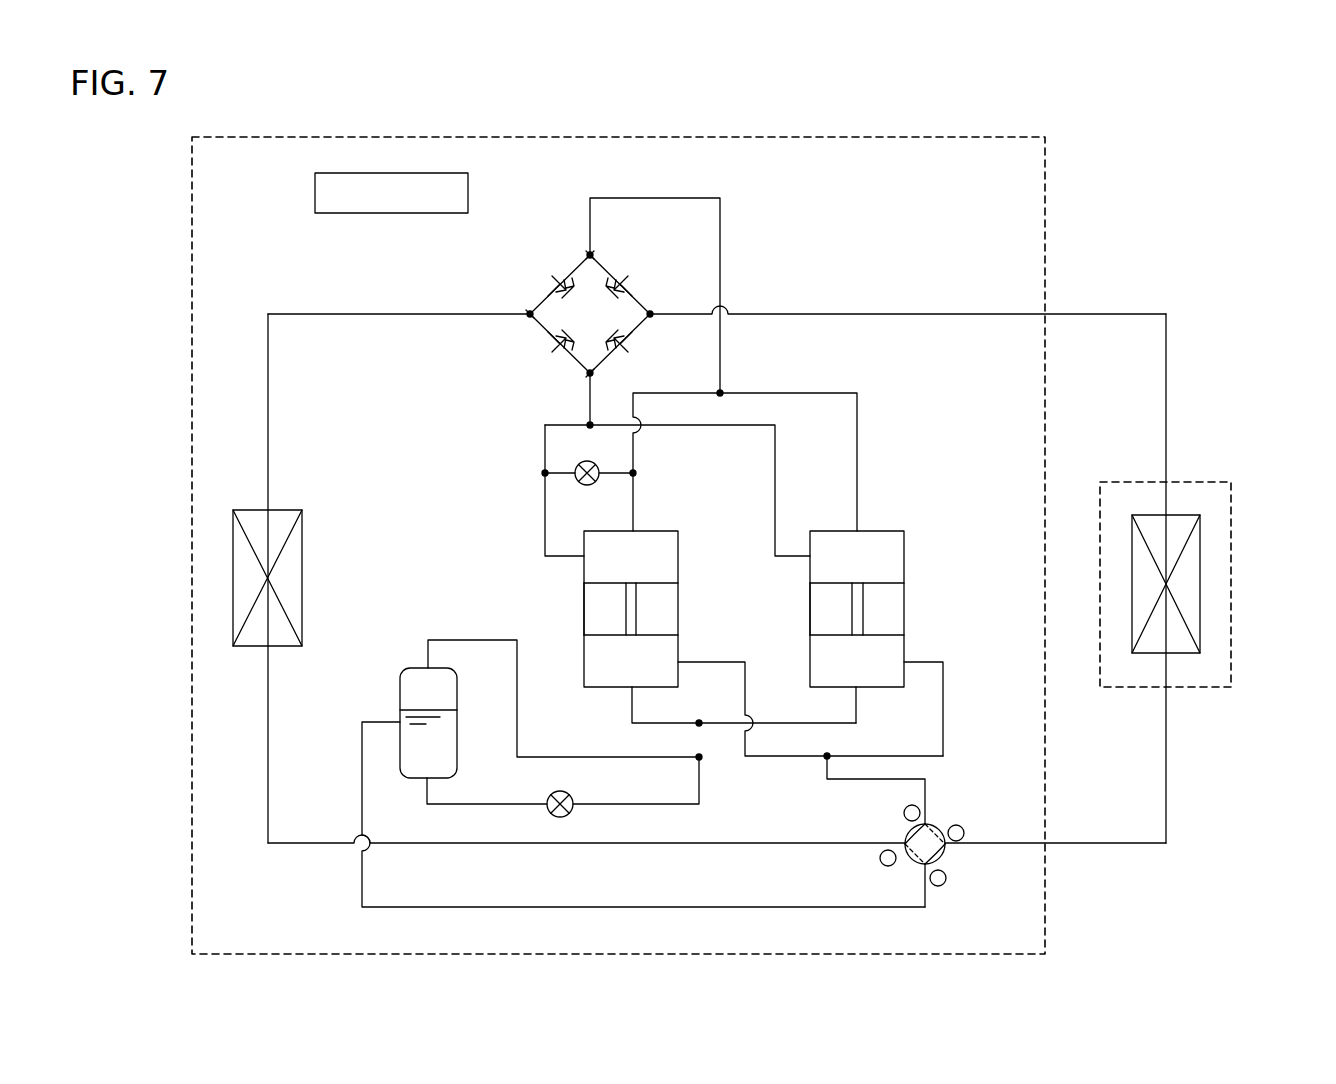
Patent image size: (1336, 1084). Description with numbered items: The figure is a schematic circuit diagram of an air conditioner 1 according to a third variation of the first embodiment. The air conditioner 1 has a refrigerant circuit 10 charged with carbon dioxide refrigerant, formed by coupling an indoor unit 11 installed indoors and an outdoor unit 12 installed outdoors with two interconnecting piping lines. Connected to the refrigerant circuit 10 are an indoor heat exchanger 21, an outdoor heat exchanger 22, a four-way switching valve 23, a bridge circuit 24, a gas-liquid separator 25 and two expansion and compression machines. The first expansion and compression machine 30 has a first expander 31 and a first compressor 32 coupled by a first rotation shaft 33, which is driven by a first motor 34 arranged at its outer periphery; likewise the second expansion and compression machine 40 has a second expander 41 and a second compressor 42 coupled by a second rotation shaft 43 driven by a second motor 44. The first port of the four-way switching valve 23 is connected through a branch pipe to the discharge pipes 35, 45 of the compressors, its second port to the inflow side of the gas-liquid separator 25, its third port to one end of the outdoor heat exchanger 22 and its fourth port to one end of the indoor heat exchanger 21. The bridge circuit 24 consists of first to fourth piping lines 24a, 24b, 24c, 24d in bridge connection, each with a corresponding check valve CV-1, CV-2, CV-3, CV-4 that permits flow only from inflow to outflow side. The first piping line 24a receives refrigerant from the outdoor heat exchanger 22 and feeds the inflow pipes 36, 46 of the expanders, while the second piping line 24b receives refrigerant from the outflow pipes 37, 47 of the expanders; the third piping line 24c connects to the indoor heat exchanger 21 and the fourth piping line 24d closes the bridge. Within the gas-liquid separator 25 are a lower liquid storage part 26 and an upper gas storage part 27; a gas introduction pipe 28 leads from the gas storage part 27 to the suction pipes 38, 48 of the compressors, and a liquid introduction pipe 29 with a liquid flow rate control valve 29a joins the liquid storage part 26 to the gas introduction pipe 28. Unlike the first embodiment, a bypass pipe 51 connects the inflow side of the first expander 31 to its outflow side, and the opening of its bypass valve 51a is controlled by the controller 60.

The air conditioner 1 is at (1282, 182).
The refrigerant circuit 10 is at (898, 300).
The indoor unit 11 is at (1165, 573).
The outdoor unit 12 is at (898, 136).
The indoor heat exchanger 21 is at (1178, 656).
The outdoor heat exchanger 22 is at (288, 650).
The four-way switching valve 23 is at (956, 860).
The bridge circuit 24 is at (590, 296).
The first piping line 24a is at (526, 322).
The second piping line 24b is at (578, 264).
The third piping line 24c is at (604, 264).
The fourth piping line 24d is at (606, 370).
The gas-liquid separator 25 is at (633, 749).
The liquid storage part 26 is at (452, 758).
The gas storage part 27 is at (400, 684).
The gas introduction pipe 28 is at (484, 640).
The liquid introduction pipe 29 is at (598, 804).
The liquid flow rate control valve 29a is at (568, 816).
The first expansion and compression machine 30 is at (612, 609).
The first expander 31 is at (680, 558).
The first compressor 32 is at (583, 660).
The first rotation shaft 33 is at (638, 594).
The first motor 34 is at (583, 608).
The discharge pipe 35 is at (720, 662).
The inflow pipe 36 is at (562, 556).
The outflow pipe 37 is at (634, 513).
The suction pipe 38 is at (632, 712).
The second expansion and compression machine 40 is at (888, 607).
The second expander 41 is at (906, 546).
The second compressor 42 is at (810, 656).
The second rotation shaft 43 is at (860, 603).
The second motor 44 is at (820, 608).
The discharge pipe 45 is at (925, 664).
The inflow pipe 46 is at (794, 556).
The outflow pipe 47 is at (859, 491).
The suction pipe 48 is at (856, 712).
The bypass pipe 51 is at (610, 476).
The bypass valve 51a is at (576, 468).
The controller 60 is at (308, 182).
The first check valve CV-1 is at (552, 354).
The second check valve CV-2 is at (548, 292).
The third check valve CV-3 is at (632, 292).
The fourth check valve CV-4 is at (636, 334).